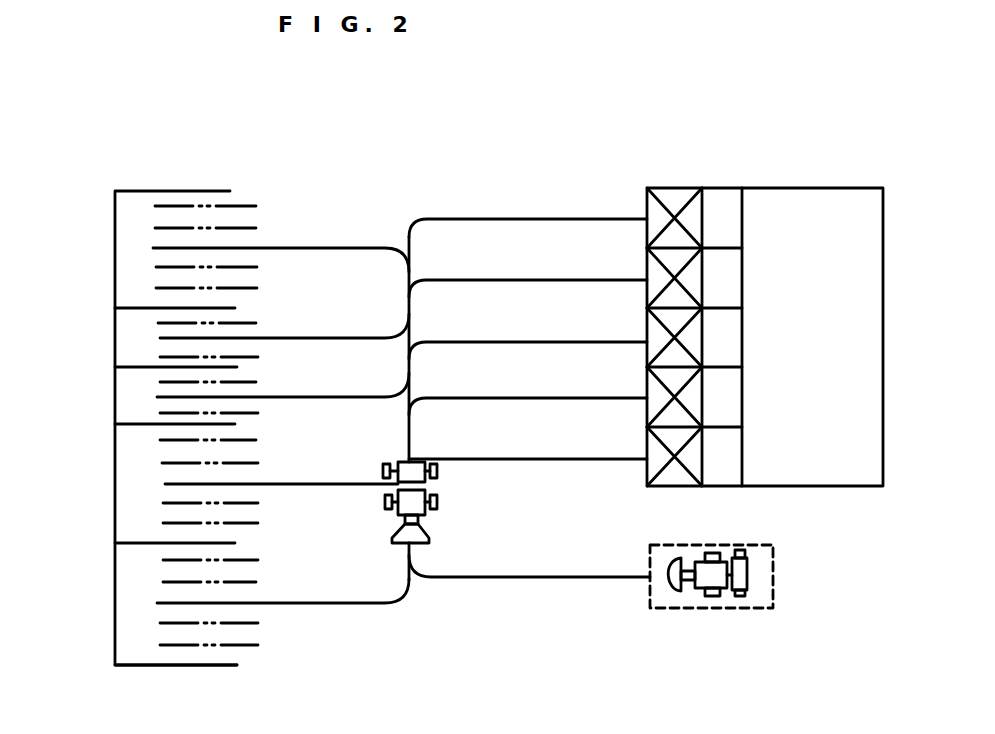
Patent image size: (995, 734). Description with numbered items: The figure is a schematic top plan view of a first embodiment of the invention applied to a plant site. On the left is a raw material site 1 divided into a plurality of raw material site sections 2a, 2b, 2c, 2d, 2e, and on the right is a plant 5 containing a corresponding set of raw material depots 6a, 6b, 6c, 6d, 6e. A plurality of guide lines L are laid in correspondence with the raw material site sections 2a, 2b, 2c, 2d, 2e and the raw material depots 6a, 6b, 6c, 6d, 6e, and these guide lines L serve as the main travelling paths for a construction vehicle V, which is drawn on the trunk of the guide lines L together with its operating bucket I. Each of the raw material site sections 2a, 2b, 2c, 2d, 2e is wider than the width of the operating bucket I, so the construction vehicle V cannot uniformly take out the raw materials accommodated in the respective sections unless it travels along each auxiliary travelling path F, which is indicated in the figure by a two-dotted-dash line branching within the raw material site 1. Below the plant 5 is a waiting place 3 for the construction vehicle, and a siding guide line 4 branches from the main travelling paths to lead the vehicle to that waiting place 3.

The raw material site 1 is at (152, 188).
The raw material site section 2a is at (113, 284).
The raw material site section 2b is at (113, 348).
The raw material site section 2c is at (113, 405).
The raw material site section 2d is at (113, 463).
The raw material site section 2e is at (113, 585).
The waiting place 3 is at (697, 610).
The siding guide line 4 is at (566, 578).
The plant 5 is at (757, 186).
The raw material depot 6a is at (675, 192).
The raw material depot 6b is at (703, 286).
The raw material depot 6c is at (703, 350).
The raw material depot 6d is at (703, 406).
The raw material depot 6e is at (703, 463).
The auxiliary travelling path F is at (237, 204).
The guide line L is at (500, 278).
The construction vehicle V is at (438, 494).
The operating bucket I is at (430, 532).